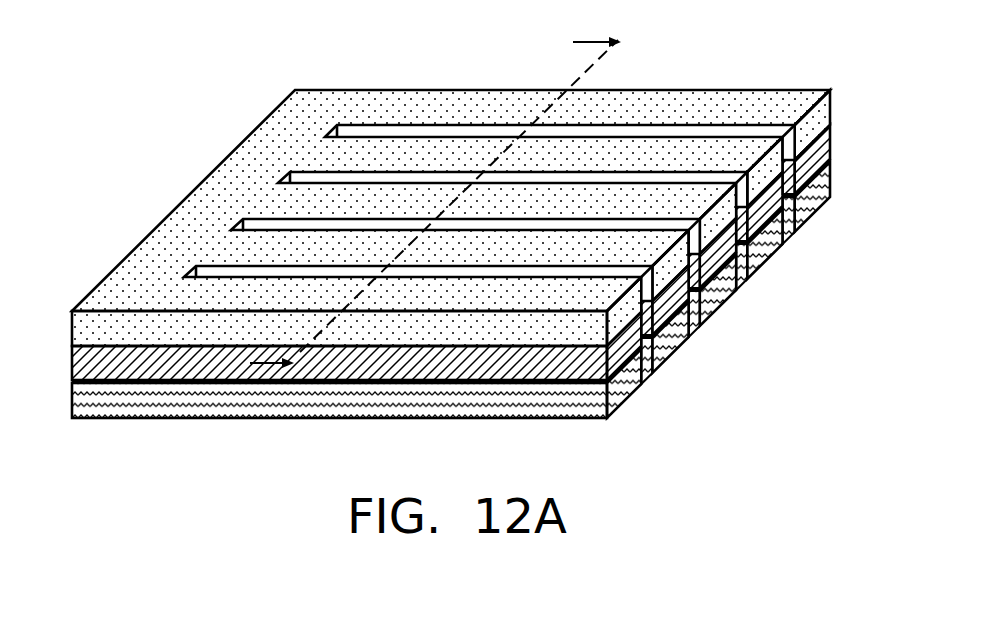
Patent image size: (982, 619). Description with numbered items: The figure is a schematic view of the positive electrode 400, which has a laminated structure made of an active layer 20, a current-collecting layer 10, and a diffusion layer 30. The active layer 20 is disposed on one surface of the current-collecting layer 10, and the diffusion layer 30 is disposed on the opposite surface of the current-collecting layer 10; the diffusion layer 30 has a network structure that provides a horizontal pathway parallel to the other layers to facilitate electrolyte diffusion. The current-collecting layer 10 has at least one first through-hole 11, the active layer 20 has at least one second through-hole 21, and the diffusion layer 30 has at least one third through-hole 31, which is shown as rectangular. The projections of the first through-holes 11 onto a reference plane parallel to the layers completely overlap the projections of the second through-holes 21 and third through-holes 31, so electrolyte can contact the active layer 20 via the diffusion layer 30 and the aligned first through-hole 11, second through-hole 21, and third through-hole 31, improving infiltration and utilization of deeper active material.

The positive electrode 400 is at (88, 44).
The current-collecting layer 10 is at (664, 353).
The first through-hole 11 is at (792, 170).
The active layer 20 is at (643, 107).
The second through-hole 21 is at (745, 133).
The diffusion layer 30 is at (730, 286).
The third through-hole 31 is at (795, 222).